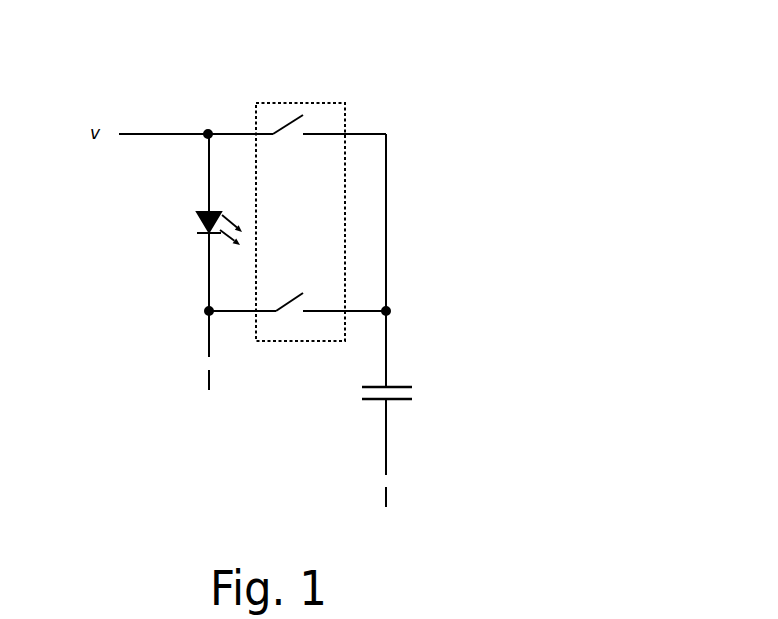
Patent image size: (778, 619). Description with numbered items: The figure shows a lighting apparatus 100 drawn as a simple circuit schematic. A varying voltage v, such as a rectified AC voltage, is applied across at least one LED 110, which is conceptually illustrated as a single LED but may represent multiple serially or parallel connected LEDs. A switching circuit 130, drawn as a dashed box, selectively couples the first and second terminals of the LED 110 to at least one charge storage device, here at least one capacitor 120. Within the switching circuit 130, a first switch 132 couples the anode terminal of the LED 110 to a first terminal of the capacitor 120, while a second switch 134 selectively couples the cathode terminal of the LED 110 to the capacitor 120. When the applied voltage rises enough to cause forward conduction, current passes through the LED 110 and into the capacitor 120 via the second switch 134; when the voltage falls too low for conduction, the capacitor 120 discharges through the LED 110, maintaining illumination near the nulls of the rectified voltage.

The lighting apparatus 100 is at (481, 125).
The LED 110 is at (160, 246).
The capacitor 120 is at (441, 360).
The switching circuit 130 is at (298, 189).
The first switch 132 is at (285, 158).
The second switch 134 is at (280, 280).